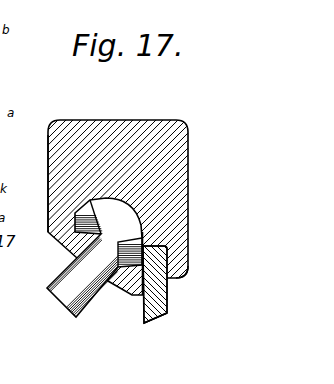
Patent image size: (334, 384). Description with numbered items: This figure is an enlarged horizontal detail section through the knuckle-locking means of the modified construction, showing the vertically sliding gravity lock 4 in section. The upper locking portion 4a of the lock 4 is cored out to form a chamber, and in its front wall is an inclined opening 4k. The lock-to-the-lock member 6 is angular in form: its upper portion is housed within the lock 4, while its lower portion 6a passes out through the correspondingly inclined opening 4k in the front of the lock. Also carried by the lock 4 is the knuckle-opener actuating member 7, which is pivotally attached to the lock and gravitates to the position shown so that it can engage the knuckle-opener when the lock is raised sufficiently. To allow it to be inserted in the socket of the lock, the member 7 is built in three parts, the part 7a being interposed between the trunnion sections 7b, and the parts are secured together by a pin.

The gravity lock 4 is at (167, 201).
The upper portion of the lock 4a is at (48, 170).
The inclined opening 4k is at (177, 279).
The lock-to-the-lock member 6 is at (143, 313).
The lower portion of the lock-to-the-lock member 6a is at (157, 317).
The knuckle-opener actuating member 7 is at (49, 278).
The interposed part of the actuating member 7a is at (63, 299).
The trunnion section 7b is at (79, 317).